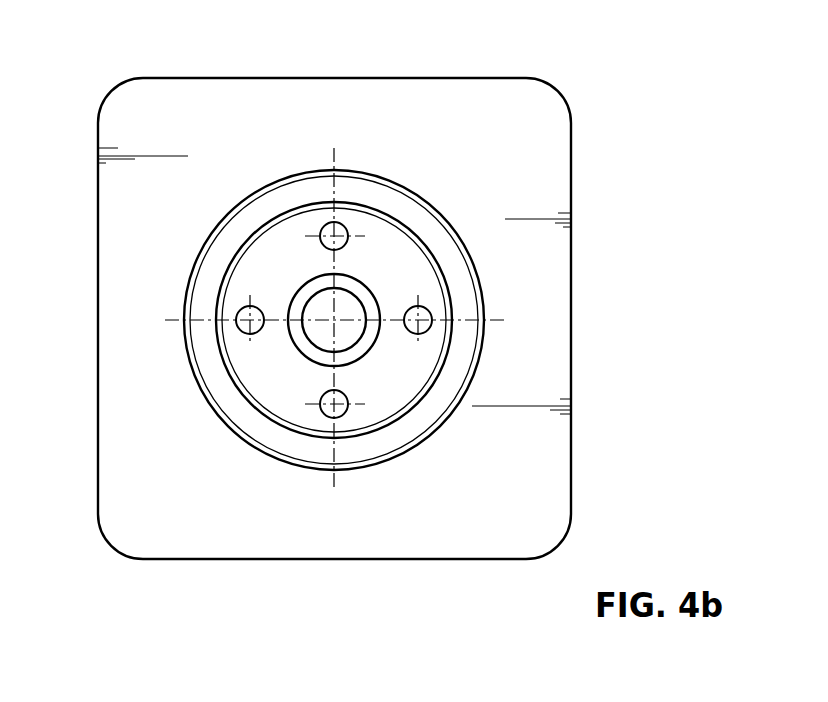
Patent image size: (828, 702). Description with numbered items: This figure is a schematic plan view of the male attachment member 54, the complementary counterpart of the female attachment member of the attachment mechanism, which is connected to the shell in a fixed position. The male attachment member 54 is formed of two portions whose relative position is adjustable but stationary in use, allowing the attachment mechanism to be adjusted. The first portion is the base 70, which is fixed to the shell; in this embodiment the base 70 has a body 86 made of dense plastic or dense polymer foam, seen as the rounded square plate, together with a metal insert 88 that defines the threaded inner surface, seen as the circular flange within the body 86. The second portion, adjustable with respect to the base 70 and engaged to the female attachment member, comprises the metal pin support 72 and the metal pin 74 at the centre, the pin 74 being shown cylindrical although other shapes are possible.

The male attachment member 54 is at (138, 64).
The base 70 is at (545, 176).
The pin support 72 is at (394, 245).
The pin 74 is at (355, 344).
The body 86 is at (562, 437).
The metal insert 88 is at (468, 343).